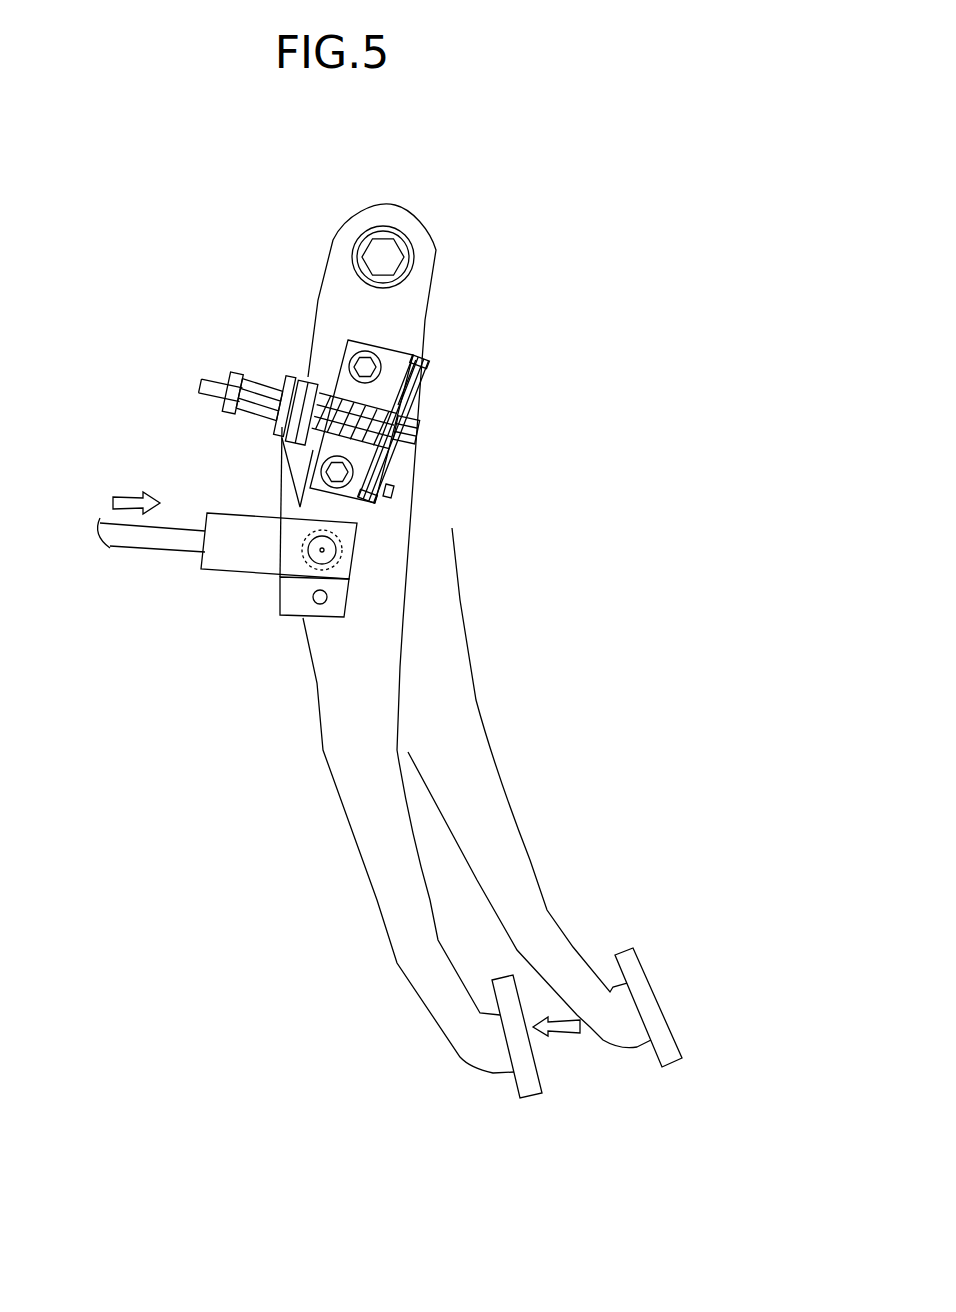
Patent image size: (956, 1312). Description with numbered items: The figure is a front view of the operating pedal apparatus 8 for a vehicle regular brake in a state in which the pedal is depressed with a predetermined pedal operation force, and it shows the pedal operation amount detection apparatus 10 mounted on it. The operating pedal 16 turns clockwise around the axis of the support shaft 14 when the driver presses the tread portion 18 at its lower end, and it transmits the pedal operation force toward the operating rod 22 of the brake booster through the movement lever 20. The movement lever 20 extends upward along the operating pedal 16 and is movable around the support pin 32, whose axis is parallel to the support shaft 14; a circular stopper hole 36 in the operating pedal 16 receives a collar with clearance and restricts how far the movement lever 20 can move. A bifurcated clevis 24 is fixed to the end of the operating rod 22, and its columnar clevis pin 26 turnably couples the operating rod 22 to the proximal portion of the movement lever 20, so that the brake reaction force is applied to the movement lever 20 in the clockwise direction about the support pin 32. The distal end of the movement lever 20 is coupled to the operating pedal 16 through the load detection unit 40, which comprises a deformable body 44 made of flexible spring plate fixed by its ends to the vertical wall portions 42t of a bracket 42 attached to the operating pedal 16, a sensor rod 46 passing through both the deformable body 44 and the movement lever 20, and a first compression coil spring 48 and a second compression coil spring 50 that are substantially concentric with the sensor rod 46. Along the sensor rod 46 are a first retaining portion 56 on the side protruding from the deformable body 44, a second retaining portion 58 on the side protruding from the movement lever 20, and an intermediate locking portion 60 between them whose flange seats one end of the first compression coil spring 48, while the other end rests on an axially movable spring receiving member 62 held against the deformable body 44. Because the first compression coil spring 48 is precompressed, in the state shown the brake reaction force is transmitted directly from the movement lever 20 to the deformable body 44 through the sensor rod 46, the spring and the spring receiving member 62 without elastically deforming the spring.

The operating pedal apparatus 8 is at (125, 855).
The pedal operation amount detection apparatus 10 is at (170, 308).
The support shaft 14 is at (392, 256).
The operating pedal 16 is at (375, 830).
The tread portion 18 is at (530, 1073).
The movement lever 20 is at (278, 486).
The operating rod 22 is at (133, 546).
The clevis 24 is at (220, 574).
The clevis pin 26 is at (308, 553).
The support pin 32 is at (318, 607).
The stopper hole 36 is at (350, 580).
The load detection unit 40 is at (505, 395).
The bracket 42 is at (385, 352).
The vertical wall portions 42t is at (428, 366).
The deformable body 44 is at (400, 458).
The sensor rod 46 is at (207, 410).
The first compression coil spring 48 is at (315, 415).
The second compression coil spring 50 is at (232, 393).
The first retaining portion 56 is at (406, 430).
The second retaining portion 58 is at (221, 390).
The intermediate locking portion 60 is at (285, 406).
The spring receiving member 62 is at (418, 396).